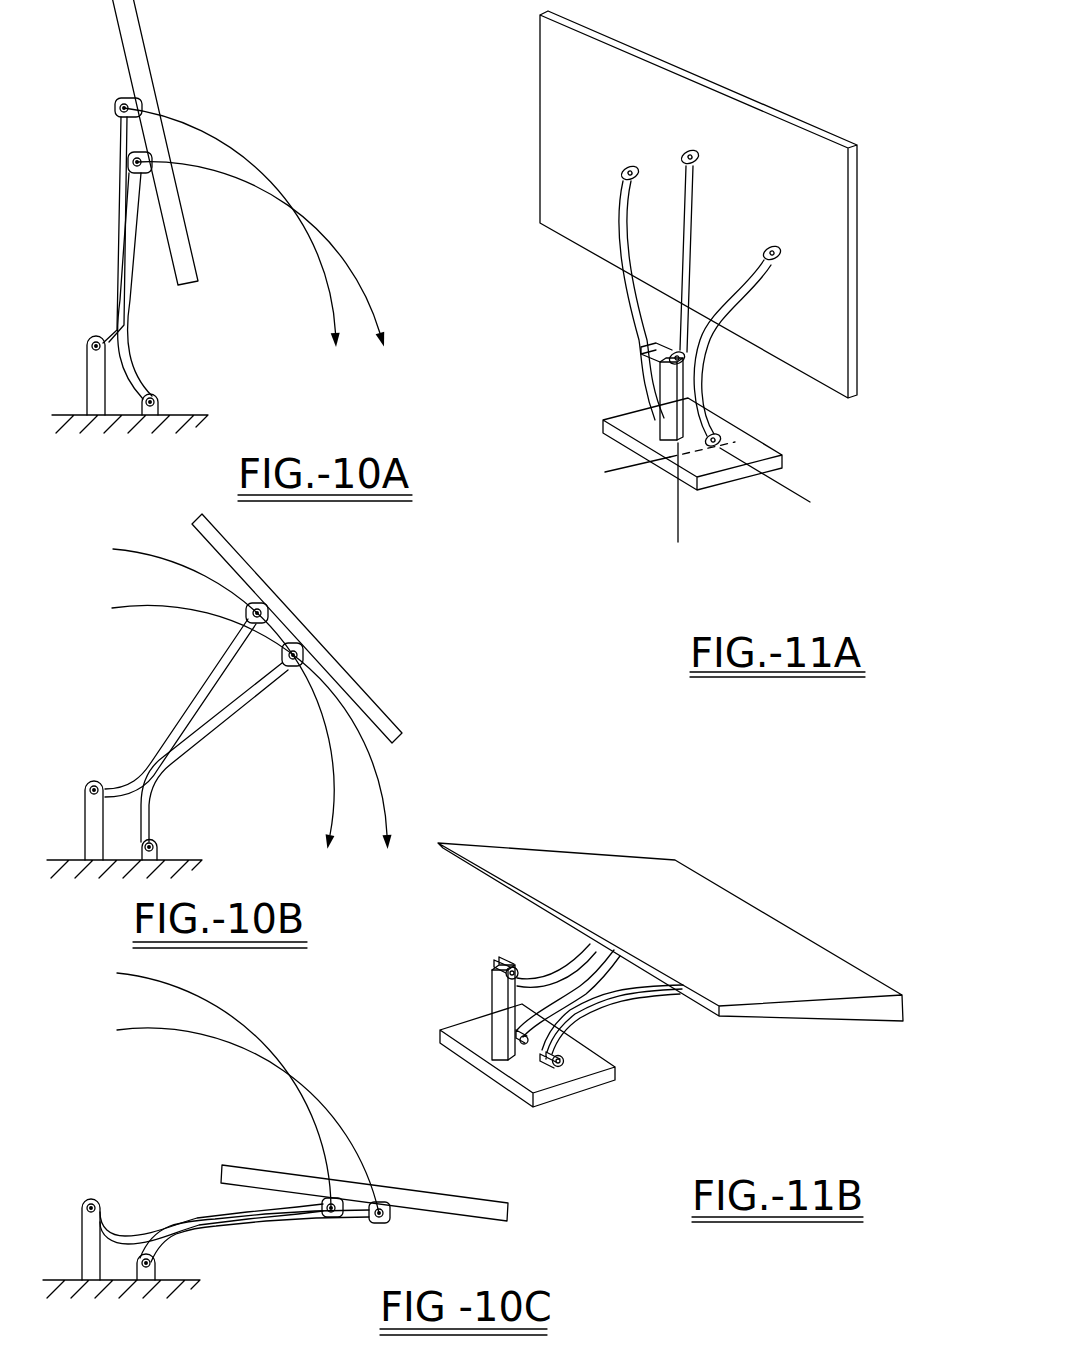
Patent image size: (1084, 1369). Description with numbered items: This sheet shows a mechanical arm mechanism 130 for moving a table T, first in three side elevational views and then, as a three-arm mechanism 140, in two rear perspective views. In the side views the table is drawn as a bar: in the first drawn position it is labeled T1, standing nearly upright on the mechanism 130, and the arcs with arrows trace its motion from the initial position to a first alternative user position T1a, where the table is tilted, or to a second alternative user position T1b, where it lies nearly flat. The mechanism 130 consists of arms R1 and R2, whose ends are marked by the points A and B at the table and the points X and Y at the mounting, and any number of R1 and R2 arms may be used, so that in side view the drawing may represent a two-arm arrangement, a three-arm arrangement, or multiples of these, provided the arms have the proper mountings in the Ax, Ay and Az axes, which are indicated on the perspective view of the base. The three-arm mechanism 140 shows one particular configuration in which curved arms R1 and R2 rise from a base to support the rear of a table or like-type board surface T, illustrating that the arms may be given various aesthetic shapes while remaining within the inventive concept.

In FIG. 11A, the table T is at (740, 99).
In FIG. 11B, the table T is at (708, 905).
In FIG. 10A, the target in first position T1 is at (148, 54).
In FIG. 10B, the first alternative user position T1a is at (297, 628).
In FIG. 10C, the second alternative user position T1b is at (415, 1185).
In FIG. 10A, the R1 arm R1 is at (125, 234).
In FIG. 10B, the R1 arm R1 is at (198, 752).
In FIG. 10C, the R1 arm R1 is at (288, 1222).
In FIG. 11A, the R1 arm R1 is at (620, 290).
In FIG. 11B, the R1 arm R1 is at (533, 1000).
In FIG. 10A, the R2 arm R2 is at (122, 132).
In FIG. 10B, the R2 arm R2 is at (176, 740).
In FIG. 10C, the R2 arm R2 is at (135, 1232).
In FIG. 11A, the R2 arm R2 is at (694, 215).
In FIG. 11B, the R2 arm R2 is at (550, 980).
In FIG. 10A, the pivot on target for first rod A is at (127, 165).
In FIG. 10B, the pivot on target for first rod A is at (297, 668).
In FIG. 10C, the pivot on target for first rod A is at (387, 1222).
In FIG. 11A, the pivot on target for first rod A is at (620, 170).
In FIG. 10A, the pivot on target for second rod B is at (114, 109).
In FIG. 10B, the pivot on target for second rod B is at (246, 610).
In FIG. 10C, the pivot on target for second rod B is at (330, 1217).
In FIG. 11A, the pivot on target for second rod B is at (686, 148).
In FIG. 10A, the base pivot for first rod X is at (153, 398).
In FIG. 10B, the base pivot for first rod X is at (158, 843).
In FIG. 10C, the base pivot for first rod X is at (153, 1262).
In FIG. 11A, the base pivot for first rod X is at (724, 437).
In FIG. 11B, the base pivot for first rod X is at (520, 1043).
In FIG. 10A, the base pivot for second rod Y is at (88, 340).
In FIG. 10B, the base pivot for second rod Y is at (88, 784).
In FIG. 10C, the base pivot for second rod Y is at (84, 1203).
In FIG. 11A, the base pivot for second rod Y is at (667, 358).
In FIG. 11B, the base pivot for second rod Y is at (493, 963).
In FIG. 10A, the mechanical arm mechanism 130 is at (163, 307).
In FIG. 10B, the mechanical arm mechanism 130 is at (186, 792).
In FIG. 10C, the mechanical arm mechanism 130 is at (166, 1158).
In FIG. 11A, the three-arm mechanism 140 is at (565, 267).
In FIG. 11B, the three-arm mechanism 140 is at (652, 1057).
In FIG. 11A, the Ax axis Ax is at (653, 470).
In FIG. 11A, the Ay axis Ay is at (684, 510).
In FIG. 11A, the Az axis Az is at (777, 489).